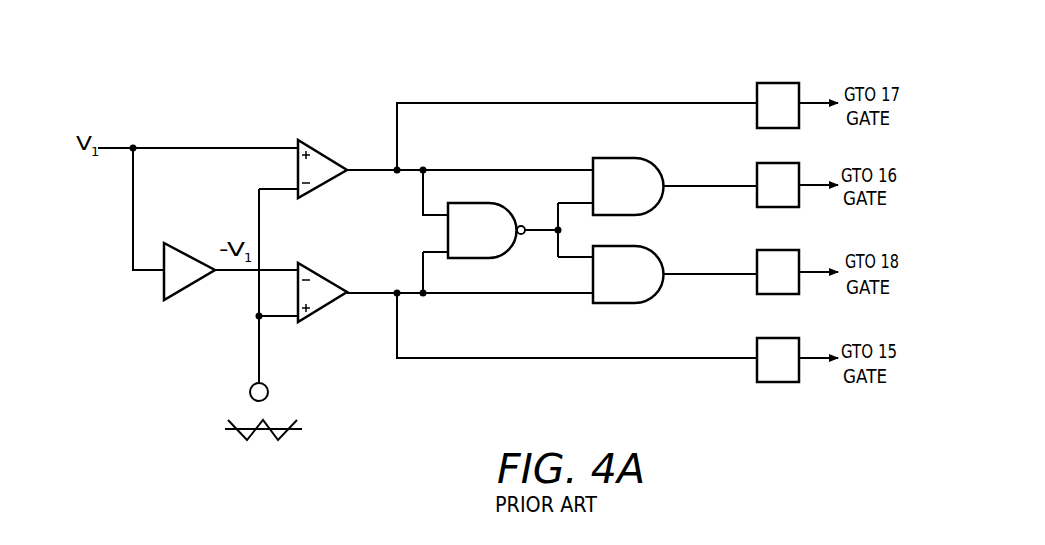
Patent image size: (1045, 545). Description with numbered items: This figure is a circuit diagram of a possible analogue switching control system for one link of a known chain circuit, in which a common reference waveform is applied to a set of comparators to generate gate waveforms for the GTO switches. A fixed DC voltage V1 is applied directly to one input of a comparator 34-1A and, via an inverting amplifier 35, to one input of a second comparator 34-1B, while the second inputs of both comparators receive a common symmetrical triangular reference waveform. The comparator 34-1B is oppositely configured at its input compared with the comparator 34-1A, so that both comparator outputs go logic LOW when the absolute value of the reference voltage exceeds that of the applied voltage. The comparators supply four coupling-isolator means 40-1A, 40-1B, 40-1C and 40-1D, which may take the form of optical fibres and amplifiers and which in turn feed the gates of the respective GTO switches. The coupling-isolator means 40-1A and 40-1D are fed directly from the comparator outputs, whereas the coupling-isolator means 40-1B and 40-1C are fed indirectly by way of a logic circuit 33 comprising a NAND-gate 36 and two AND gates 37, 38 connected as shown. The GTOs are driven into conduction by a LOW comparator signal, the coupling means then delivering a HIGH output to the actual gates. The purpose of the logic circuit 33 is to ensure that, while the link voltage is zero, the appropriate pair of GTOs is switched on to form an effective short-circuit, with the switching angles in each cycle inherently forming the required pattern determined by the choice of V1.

The logic circuit 33 is at (538, 147).
The comparator 34-1A is at (328, 126).
The second comparator 34-1B is at (332, 308).
The inverting amplifier 35 is at (196, 288).
The NAND-gate 36 is at (510, 250).
The AND gate 37 is at (622, 158).
The AND gate 38 is at (648, 265).
The coupling-isolator means 40-1A is at (787, 83).
The coupling-isolator means 40-1B is at (757, 175).
The coupling-isolator means 40-1C is at (765, 255).
The coupling-isolator means 40-1D is at (758, 348).